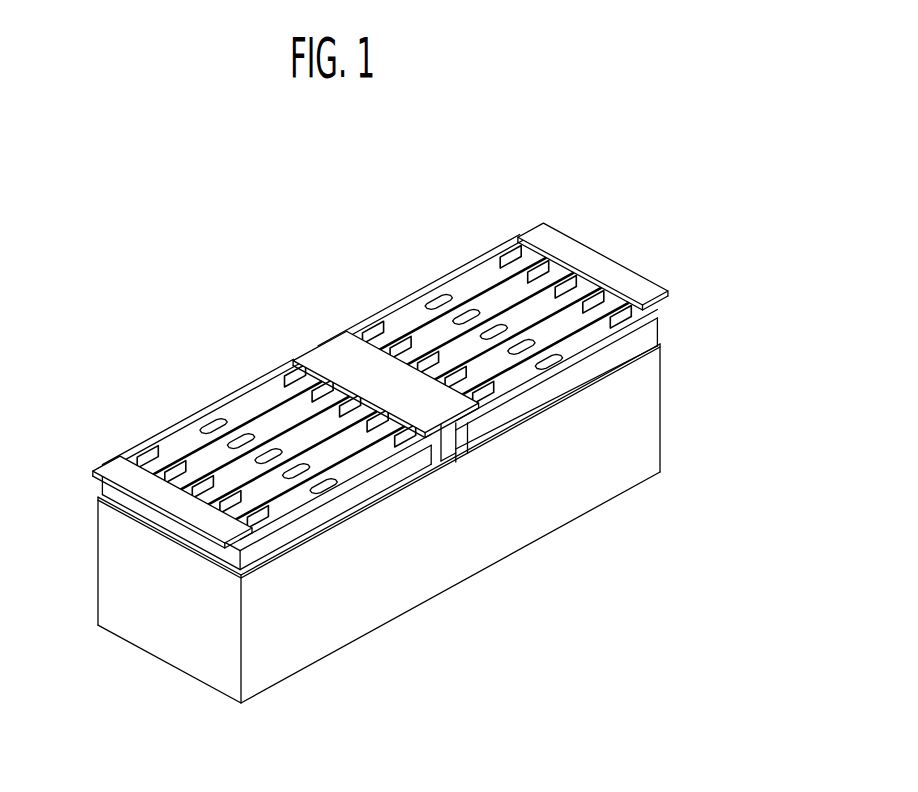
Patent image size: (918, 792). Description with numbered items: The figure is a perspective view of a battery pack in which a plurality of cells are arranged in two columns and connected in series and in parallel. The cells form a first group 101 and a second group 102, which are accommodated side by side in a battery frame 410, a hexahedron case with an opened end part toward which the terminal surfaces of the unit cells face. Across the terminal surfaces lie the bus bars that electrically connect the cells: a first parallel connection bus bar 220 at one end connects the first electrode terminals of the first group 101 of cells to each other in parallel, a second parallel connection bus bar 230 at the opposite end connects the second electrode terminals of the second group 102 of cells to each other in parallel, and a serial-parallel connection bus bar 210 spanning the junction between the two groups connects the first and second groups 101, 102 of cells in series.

The first group of cells 101 is at (193, 401).
The second group of cells 102 is at (415, 271).
The serial-parallel connection bus bar 210 is at (314, 338).
The first parallel connection bus bar 220 is at (104, 456).
The second parallel connection bus bar 230 is at (592, 238).
The battery frame 410 is at (636, 431).